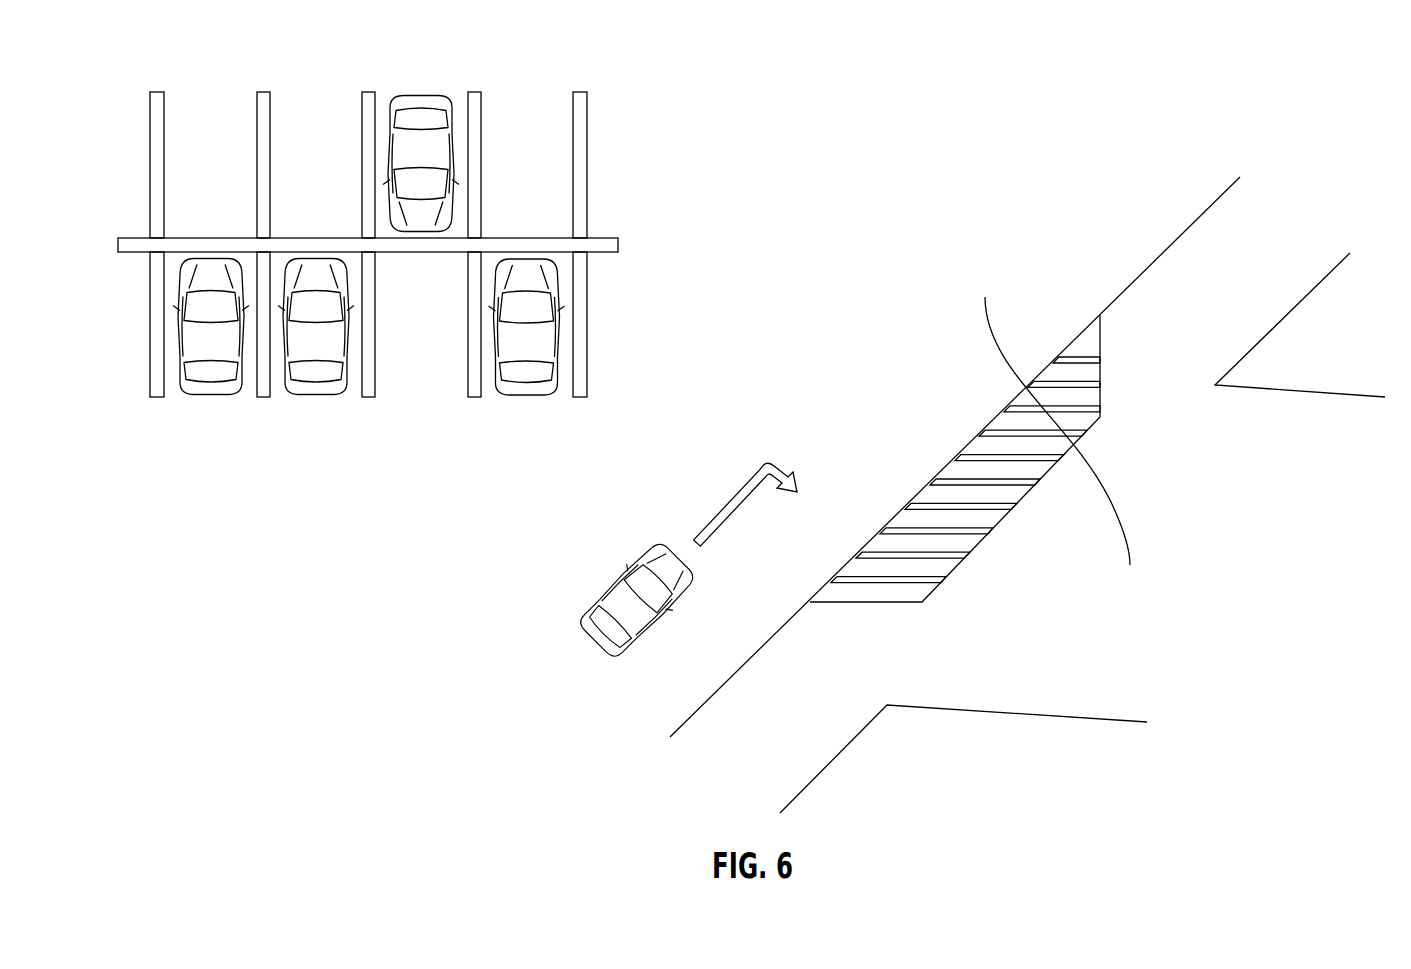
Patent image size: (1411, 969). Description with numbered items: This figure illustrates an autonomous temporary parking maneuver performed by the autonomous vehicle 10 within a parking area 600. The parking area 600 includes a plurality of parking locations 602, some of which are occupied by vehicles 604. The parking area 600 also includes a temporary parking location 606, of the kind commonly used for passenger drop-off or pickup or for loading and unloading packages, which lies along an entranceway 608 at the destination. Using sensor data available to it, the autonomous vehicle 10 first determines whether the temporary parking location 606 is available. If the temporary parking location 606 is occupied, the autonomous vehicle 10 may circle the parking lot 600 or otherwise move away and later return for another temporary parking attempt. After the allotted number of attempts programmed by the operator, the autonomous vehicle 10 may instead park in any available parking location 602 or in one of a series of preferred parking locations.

The parking area 600 is at (1301, 74).
The parking locations 602 is at (536, 163).
The vehicles 604 is at (210, 397).
The temporary parking location 606 is at (982, 409).
The entranceway 608 is at (1050, 415).
The autonomous vehicle 10 is at (628, 613).